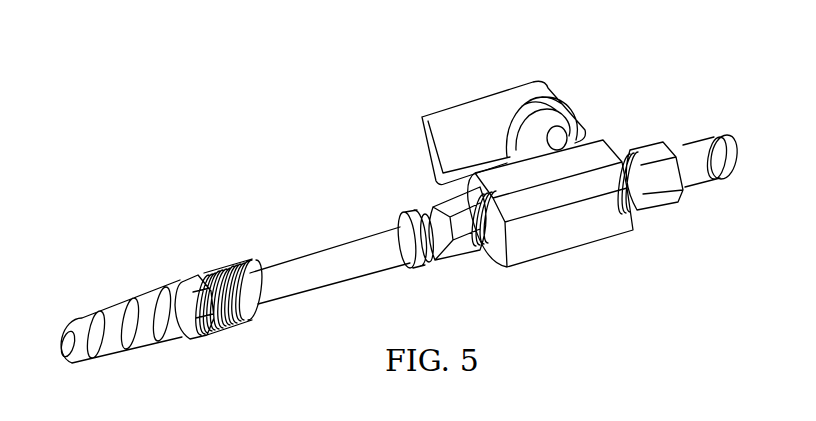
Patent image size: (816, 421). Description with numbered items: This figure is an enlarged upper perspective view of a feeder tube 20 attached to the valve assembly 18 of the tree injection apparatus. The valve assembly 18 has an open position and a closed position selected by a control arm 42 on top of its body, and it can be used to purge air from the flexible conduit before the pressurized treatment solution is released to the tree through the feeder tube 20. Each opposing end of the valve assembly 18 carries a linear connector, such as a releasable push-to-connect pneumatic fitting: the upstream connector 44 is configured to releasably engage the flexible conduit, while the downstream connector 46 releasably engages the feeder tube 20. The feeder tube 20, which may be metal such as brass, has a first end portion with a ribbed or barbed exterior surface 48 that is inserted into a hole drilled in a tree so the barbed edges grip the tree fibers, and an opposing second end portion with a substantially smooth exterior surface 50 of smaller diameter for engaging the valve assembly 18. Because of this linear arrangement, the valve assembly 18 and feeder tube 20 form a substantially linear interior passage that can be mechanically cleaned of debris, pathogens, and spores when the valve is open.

The valve assembly 18 is at (649, 290).
The feeder tube 20 is at (215, 214).
The control arm 42 is at (472, 130).
The upstream connector 44 is at (700, 160).
The downstream connector 46 is at (430, 267).
The ribbed or barbed exterior surface 48 is at (130, 320).
The smooth exterior surface 50 is at (335, 265).